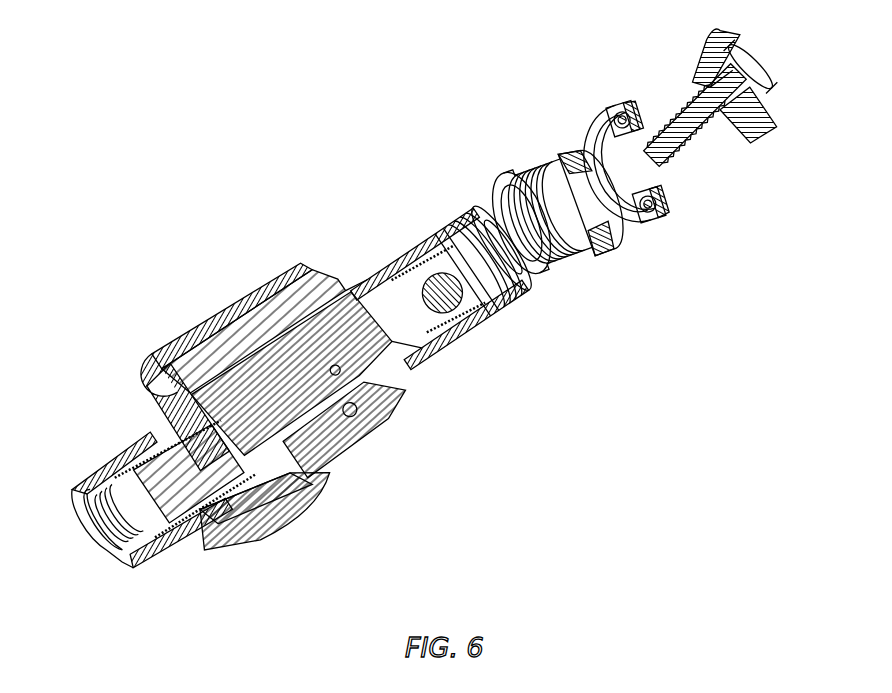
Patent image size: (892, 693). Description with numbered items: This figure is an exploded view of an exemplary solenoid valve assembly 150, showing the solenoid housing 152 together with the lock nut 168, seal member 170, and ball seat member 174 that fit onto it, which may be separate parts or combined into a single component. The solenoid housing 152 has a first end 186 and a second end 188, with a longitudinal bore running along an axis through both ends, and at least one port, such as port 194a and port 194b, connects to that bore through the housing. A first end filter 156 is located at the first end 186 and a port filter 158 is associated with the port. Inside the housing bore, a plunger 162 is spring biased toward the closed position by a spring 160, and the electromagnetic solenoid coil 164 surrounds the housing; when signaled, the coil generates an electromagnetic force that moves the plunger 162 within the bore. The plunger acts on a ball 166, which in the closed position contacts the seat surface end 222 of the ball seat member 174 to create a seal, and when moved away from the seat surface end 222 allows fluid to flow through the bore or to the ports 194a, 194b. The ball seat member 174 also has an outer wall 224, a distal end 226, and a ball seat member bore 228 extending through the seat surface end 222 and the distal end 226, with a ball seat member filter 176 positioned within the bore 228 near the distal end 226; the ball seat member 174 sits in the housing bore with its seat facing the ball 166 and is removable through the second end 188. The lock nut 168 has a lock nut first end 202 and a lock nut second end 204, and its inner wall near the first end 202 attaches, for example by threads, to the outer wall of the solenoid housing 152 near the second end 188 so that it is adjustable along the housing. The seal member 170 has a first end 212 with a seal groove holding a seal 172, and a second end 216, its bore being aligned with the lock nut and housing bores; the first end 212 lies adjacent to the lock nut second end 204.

The solenoid valve assembly 150 is at (146, 180).
The solenoid housing 152 is at (450, 220).
The first end filter 156 is at (108, 528).
The port filter 158 is at (440, 360).
The spring 160 is at (150, 560).
The plunger 162 is at (323, 497).
The electromagnetic solenoid coil 164 is at (230, 345).
The ball 166 is at (455, 305).
The lock nut 168 is at (533, 148).
The seal member 170 is at (607, 103).
The seal 172 is at (652, 205).
The ball seat member 174 is at (757, 145).
The ball seat member filter 176 is at (778, 83).
The first end 186 is at (76, 500).
The second end 188 is at (532, 272).
The port 194a is at (448, 330).
The port 194b is at (450, 248).
The lock nut first end 202 is at (500, 190).
The lock nut second end 204 is at (600, 225).
The first end 212 is at (600, 142).
The second end 216 is at (625, 112).
The seat surface end 222 is at (645, 185).
The outer wall 224 is at (715, 60).
The distal end 226 is at (790, 108).
The ball seat member bore 228 is at (727, 112).